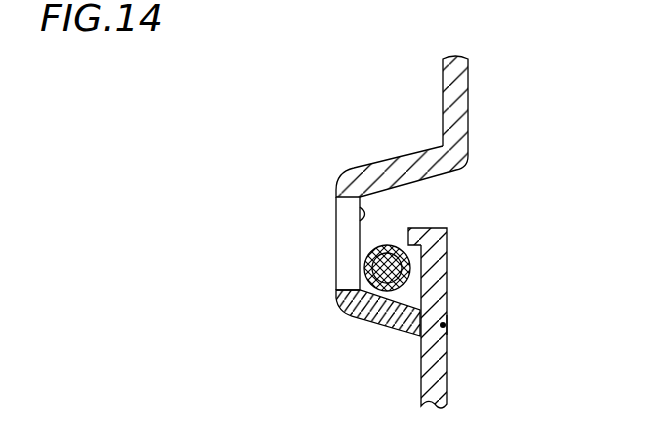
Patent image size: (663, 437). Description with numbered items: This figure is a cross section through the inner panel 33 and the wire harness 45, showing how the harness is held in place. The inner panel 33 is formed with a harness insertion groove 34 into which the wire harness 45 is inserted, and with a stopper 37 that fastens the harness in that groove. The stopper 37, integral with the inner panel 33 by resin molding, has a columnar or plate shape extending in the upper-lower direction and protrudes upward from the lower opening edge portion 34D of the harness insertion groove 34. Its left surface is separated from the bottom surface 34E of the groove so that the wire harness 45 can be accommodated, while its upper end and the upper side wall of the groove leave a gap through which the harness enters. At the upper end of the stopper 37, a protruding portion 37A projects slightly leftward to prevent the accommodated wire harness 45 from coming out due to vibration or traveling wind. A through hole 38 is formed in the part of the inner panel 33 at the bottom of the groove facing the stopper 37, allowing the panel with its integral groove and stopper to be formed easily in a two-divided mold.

The inner panel 33 is at (463, 87).
The harness insertion groove 34 is at (392, 191).
The bottom surface 34E is at (343, 208).
The lower opening edge portion 34D is at (445, 325).
The wire harness 45 is at (366, 252).
The through hole 38 is at (347, 283).
The stopper 37 is at (437, 264).
The protruding portion 37A is at (410, 228).